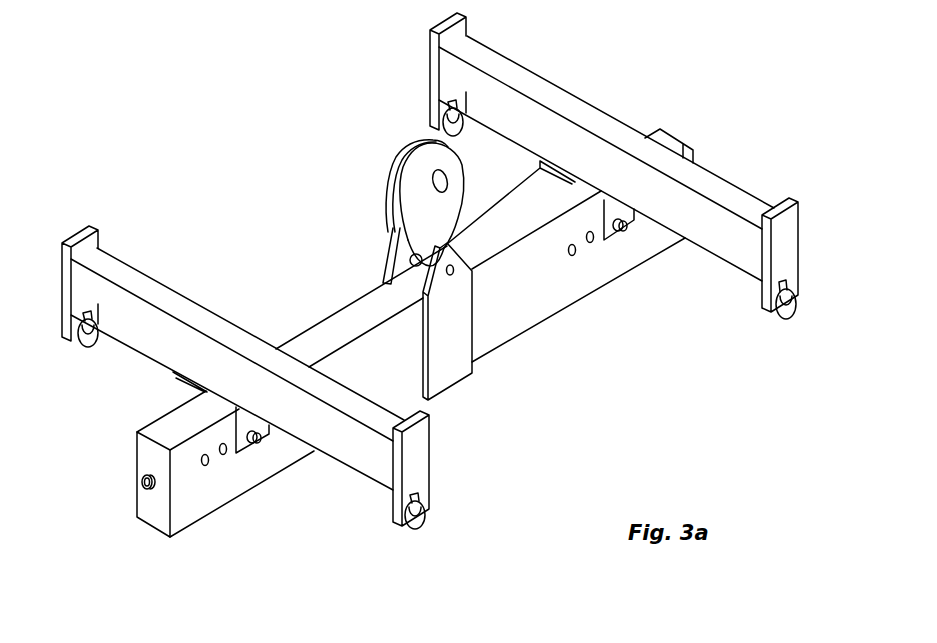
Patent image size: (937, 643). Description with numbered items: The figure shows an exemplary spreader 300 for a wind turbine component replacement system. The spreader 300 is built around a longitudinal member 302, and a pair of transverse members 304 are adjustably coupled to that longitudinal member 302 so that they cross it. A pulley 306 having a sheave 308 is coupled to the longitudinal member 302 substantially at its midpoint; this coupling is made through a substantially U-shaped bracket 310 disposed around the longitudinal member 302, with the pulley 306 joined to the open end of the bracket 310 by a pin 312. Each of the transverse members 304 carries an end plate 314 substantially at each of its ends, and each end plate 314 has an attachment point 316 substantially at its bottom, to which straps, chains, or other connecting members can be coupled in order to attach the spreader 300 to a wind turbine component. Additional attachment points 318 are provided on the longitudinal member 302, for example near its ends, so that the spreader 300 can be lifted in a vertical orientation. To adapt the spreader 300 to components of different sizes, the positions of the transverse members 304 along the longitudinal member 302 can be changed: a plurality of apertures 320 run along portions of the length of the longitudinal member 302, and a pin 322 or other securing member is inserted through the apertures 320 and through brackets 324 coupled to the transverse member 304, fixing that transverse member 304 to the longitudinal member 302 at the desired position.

The spreader 300 is at (455, 293).
The longitudinal member 302 is at (380, 366).
The transverse members 304 is at (140, 280).
The pulley 306 is at (380, 186).
The sheave 308 is at (413, 157).
The U-shaped bracket 310 is at (447, 377).
The pin 312 is at (405, 267).
The end plate 314 is at (787, 260).
The attachment point 316 is at (797, 310).
The additional attachment point 318 is at (138, 483).
The apertures 320 is at (205, 466).
The pin 322 is at (262, 443).
The brackets 324 is at (228, 456).